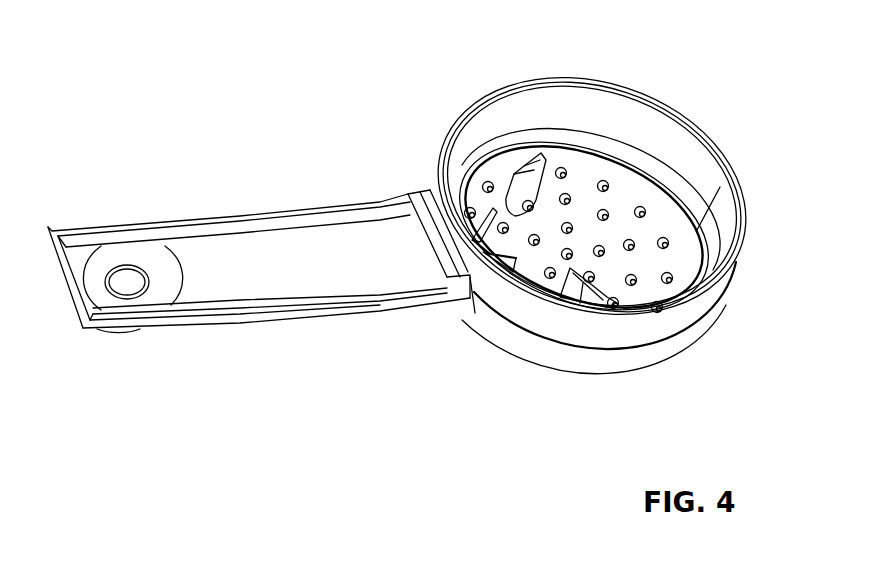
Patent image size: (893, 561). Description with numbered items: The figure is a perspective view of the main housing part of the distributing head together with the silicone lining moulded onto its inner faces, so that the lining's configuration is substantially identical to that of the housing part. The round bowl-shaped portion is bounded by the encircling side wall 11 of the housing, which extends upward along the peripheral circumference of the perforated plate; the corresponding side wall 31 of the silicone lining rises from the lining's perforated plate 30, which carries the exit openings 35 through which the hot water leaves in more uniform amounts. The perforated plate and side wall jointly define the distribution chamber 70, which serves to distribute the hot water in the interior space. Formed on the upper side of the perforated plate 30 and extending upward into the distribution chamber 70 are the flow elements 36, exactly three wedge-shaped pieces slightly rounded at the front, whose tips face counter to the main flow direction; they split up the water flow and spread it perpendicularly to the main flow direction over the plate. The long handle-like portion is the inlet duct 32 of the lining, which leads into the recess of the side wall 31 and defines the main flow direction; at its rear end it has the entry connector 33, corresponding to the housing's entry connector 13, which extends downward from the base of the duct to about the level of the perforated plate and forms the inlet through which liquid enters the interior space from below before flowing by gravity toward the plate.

The side wall 11 is at (645, 332).
The side wall 31 is at (715, 215).
The distribution chamber 70 is at (587, 212).
The exit openings 35 is at (638, 283).
The flow elements 36 is at (480, 218).
The perforated plate 30 is at (534, 273).
The inlet duct 32 is at (267, 270).
The entry connector 33 is at (122, 278).
The entry connector 13 is at (120, 334).